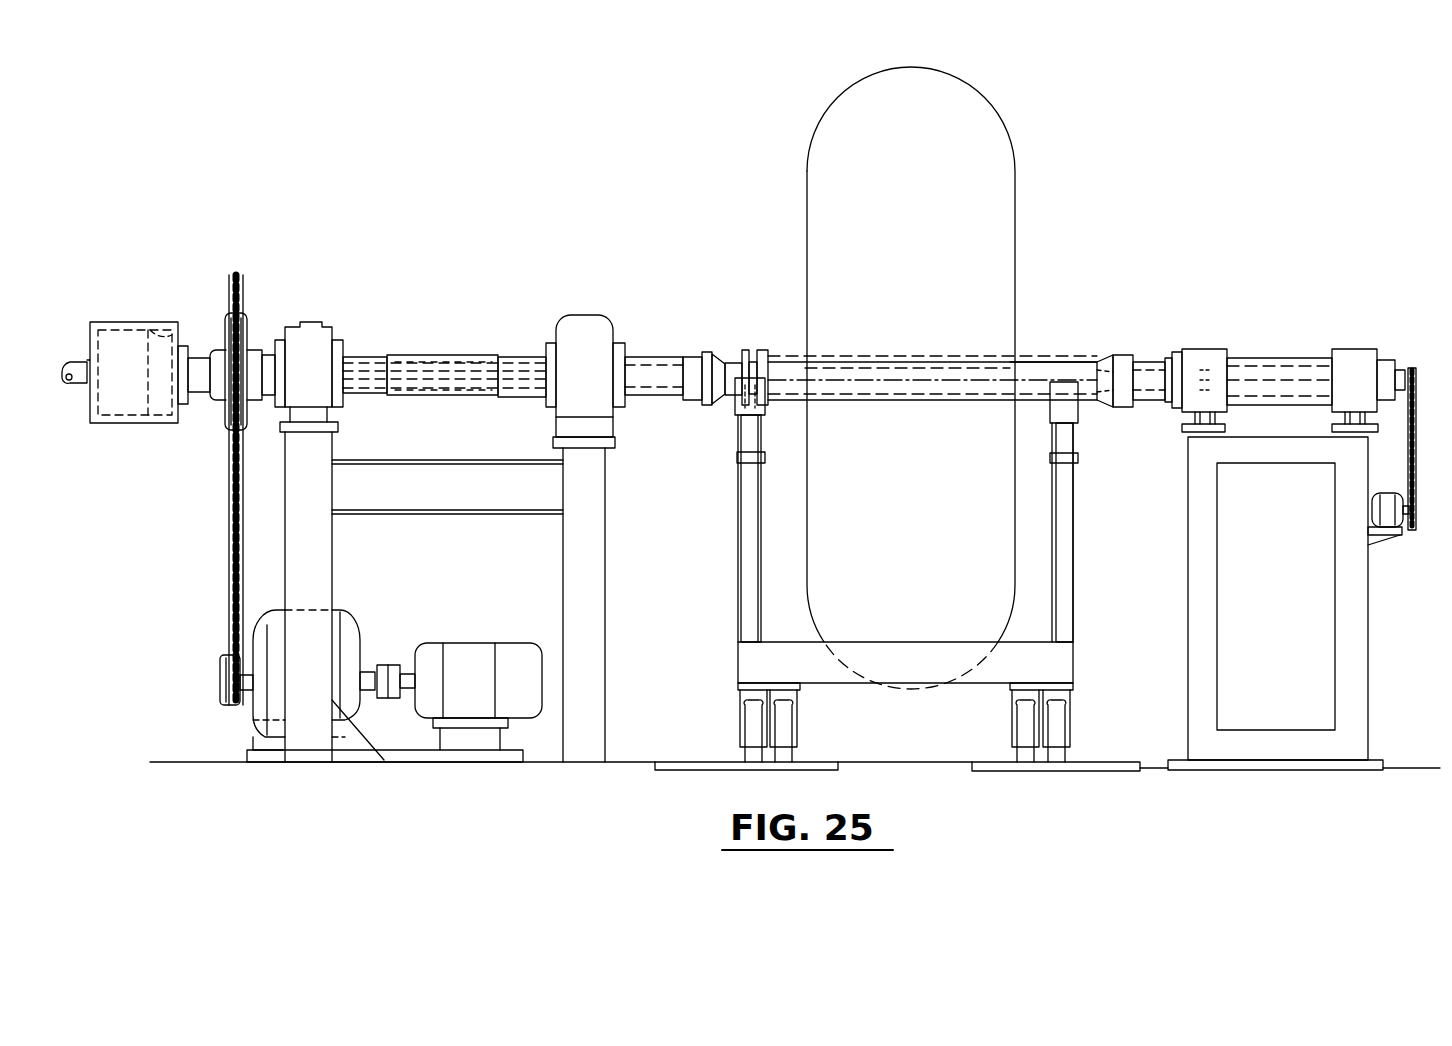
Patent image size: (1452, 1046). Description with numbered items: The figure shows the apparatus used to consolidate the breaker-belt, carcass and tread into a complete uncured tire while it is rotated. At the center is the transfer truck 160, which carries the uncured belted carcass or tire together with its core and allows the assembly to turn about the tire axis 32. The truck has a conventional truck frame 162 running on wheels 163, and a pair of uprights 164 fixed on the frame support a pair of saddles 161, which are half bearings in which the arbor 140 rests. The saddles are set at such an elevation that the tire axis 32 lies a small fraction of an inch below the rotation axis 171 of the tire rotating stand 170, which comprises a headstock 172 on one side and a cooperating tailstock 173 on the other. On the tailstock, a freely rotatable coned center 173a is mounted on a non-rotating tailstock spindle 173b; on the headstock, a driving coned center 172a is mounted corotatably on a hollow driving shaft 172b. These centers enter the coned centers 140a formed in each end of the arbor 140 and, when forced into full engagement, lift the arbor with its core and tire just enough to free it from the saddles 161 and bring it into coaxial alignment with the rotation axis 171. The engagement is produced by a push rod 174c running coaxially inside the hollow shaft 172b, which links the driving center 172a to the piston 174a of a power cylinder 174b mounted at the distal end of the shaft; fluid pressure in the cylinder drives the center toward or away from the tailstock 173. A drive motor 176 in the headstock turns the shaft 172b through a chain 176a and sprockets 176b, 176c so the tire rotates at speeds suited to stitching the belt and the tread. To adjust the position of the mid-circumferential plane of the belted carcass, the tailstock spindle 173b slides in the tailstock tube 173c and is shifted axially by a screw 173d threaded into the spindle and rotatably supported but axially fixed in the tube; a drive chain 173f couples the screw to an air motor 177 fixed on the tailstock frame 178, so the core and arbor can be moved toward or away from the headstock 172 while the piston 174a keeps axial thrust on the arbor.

The tire axis 32 is at (868, 390).
The arbor 140 is at (1025, 362).
The coned centers 140a is at (722, 388).
The transfer truck 160 is at (1077, 628).
The saddles 161 is at (748, 395).
The truck frame 162 is at (738, 600).
The wheels 163 is at (775, 742).
The uprights 164 is at (742, 535).
The tire rotating stand 170 is at (1018, 235).
The rotation axis 171 is at (847, 375).
The headstock 172 is at (612, 318).
The driving coned center 172a is at (722, 375).
The hollow driving shaft 172b is at (418, 356).
The tailstock 173 is at (1222, 338).
The freely rotatable coned center 173a is at (1103, 395).
The tailstock spindle 173b is at (1150, 390).
The tailstock tube 173c is at (1278, 357).
The screw 173d is at (1268, 380).
The drive chain 173f is at (1414, 400).
The piston 174a is at (158, 350).
The power cylinder 174b is at (128, 322).
The push rod 174c is at (455, 372).
The drive motor 176 is at (362, 635).
The chain 176a is at (233, 538).
The sprocket 176b is at (228, 428).
The sprocket 176c is at (222, 675).
The air motor 177 is at (1385, 515).
The tailstock frame 178 is at (1348, 630).